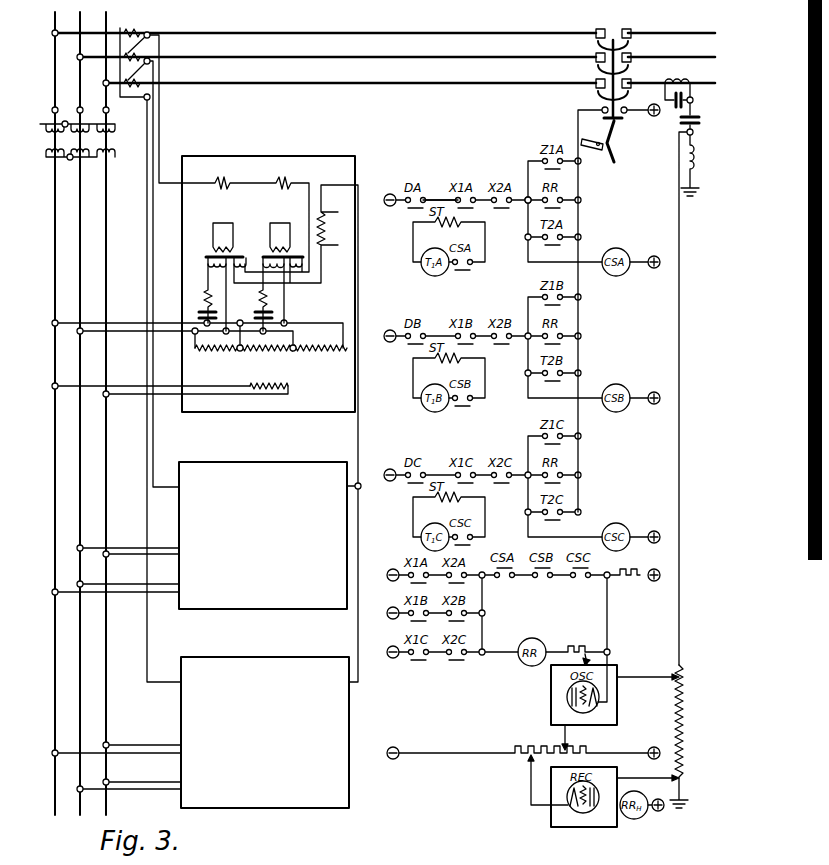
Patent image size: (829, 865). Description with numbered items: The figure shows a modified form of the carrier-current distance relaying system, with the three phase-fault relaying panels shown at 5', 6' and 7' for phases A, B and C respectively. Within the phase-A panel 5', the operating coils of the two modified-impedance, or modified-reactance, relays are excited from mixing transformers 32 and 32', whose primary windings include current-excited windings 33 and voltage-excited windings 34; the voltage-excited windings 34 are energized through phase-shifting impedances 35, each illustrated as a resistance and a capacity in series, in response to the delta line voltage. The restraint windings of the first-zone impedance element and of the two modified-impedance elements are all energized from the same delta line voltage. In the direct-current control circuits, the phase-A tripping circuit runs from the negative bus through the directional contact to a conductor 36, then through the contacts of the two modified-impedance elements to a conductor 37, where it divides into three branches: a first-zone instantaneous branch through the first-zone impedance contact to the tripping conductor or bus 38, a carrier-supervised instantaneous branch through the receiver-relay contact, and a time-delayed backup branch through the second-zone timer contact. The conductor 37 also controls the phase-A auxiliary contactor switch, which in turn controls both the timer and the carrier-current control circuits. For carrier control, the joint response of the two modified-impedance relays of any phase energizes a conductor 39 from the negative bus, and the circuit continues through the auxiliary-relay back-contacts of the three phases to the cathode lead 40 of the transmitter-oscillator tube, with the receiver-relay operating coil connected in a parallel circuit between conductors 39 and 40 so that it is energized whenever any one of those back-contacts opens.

The phase-fault relaying panel 5' is at (271, 406).
The phase-fault relaying panel 6' is at (263, 524).
The phase-fault relaying panel 7' is at (265, 721).
The mixing transformer 32 is at (210, 238).
The mixing transformer 32' is at (268, 238).
The current-excited winding 33 is at (297, 266).
The voltage-excited winding 34 is at (211, 265).
The phase-shifting impedance 35 is at (208, 301).
The conductor 36 is at (441, 199).
The conductor 37 is at (525, 203).
The tripping conductor 38 is at (582, 160).
The conductor 39 is at (484, 597).
The cathode lead 40 is at (608, 600).